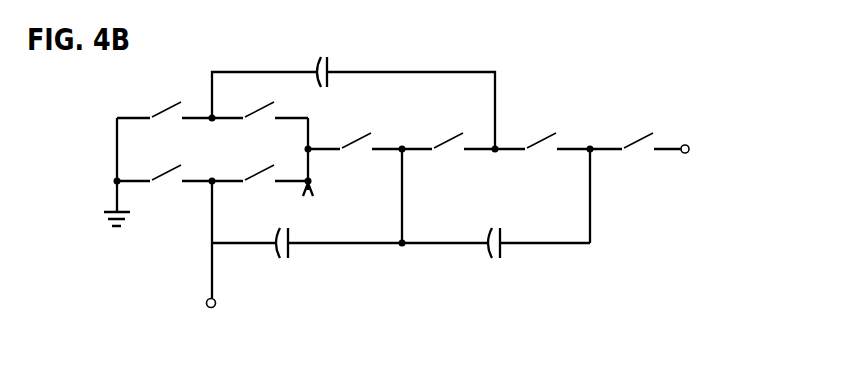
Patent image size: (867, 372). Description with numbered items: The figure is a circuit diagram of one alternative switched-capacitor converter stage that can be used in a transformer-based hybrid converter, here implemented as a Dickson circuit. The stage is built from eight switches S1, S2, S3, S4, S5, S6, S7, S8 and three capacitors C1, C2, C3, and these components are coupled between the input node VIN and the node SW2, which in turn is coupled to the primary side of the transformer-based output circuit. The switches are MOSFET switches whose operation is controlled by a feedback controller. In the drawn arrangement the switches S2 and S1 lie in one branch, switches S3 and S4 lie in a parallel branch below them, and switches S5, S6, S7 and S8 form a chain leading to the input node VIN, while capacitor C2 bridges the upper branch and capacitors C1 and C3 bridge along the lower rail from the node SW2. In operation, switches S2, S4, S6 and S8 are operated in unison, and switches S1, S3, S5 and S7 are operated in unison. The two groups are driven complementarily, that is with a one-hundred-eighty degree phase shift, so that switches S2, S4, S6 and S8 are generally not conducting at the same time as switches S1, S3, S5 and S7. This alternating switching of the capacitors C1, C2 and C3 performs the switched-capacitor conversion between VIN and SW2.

The switch S1 is at (260, 126).
The switch S2 is at (164, 126).
The switch S3 is at (164, 189).
The switch S4 is at (260, 189).
The switch S5 is at (355, 157).
The switch S6 is at (448, 157).
The switch S7 is at (542, 157).
The switch S8 is at (635, 157).
The capacitor C1 is at (280, 261).
The capacitor C2 is at (321, 59).
The capacitor C3 is at (493, 260).
The node VSW2 SW2 is at (240, 318).
The input node VIN is at (707, 147).